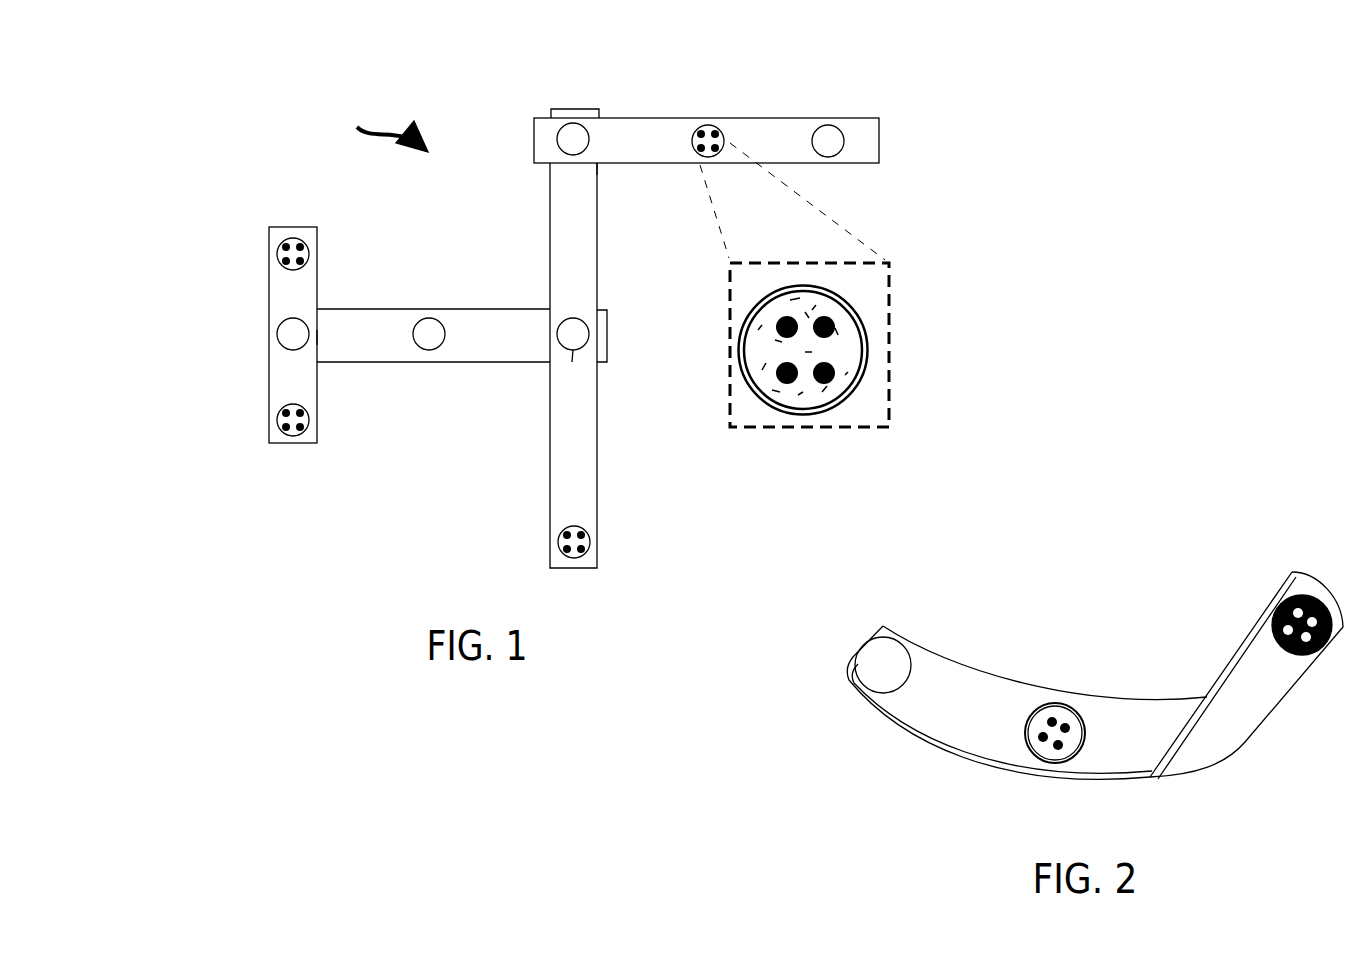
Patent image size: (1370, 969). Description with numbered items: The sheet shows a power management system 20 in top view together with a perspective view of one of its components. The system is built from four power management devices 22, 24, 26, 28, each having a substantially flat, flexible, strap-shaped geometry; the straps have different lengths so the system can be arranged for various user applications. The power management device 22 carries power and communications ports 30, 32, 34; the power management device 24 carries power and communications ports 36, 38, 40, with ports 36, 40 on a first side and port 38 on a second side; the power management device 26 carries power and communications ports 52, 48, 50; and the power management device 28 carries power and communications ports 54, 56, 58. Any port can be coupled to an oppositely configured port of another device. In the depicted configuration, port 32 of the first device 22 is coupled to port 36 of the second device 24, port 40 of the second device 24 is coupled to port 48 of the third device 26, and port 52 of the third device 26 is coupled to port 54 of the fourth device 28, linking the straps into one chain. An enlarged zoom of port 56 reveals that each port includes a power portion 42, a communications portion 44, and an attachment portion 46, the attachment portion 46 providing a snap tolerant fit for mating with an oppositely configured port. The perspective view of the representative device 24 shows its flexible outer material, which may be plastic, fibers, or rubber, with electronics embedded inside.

In FIG. 1, the power management system 20 is at (377, 113).
In FIG. 1, the power management device 22 is at (275, 227).
In FIG. 1, the power management device 24 is at (363, 327).
In FIG. 2, the power management device 24 is at (973, 678).
In FIG. 1, the power management device 26 is at (550, 237).
In FIG. 1, the power management device 28 is at (534, 120).
In FIG. 1, the power and communications port 30 is at (303, 237).
In FIG. 1, the power and communications port 32 is at (287, 322).
In FIG. 2, the power and communications port 32 is at (907, 638).
In FIG. 1, the power and communications port 34 is at (284, 407).
In FIG. 1, the power and communications port 36 is at (310, 348).
In FIG. 1, the power and communications port 38 is at (428, 317).
In FIG. 2, the power and communications port 38 is at (1052, 703).
In FIG. 1, the power and communications port 40 is at (566, 371).
In FIG. 2, the power and communications port 40 is at (1275, 613).
In FIG. 1, the power portion 42 is at (884, 237).
In FIG. 1, the communications portion 44 is at (790, 418).
In FIG. 1, the attachment portion 46 is at (860, 320).
In FIG. 1, the power and communications port 48 is at (580, 325).
In FIG. 1, the power and communications port 50 is at (564, 530).
In FIG. 1, the power and communications port 52 is at (598, 164).
In FIG. 1, the power and communications port 54 is at (580, 129).
In FIG. 1, the power and communications port 56 is at (713, 123).
In FIG. 1, the power and communications port 58 is at (827, 130).